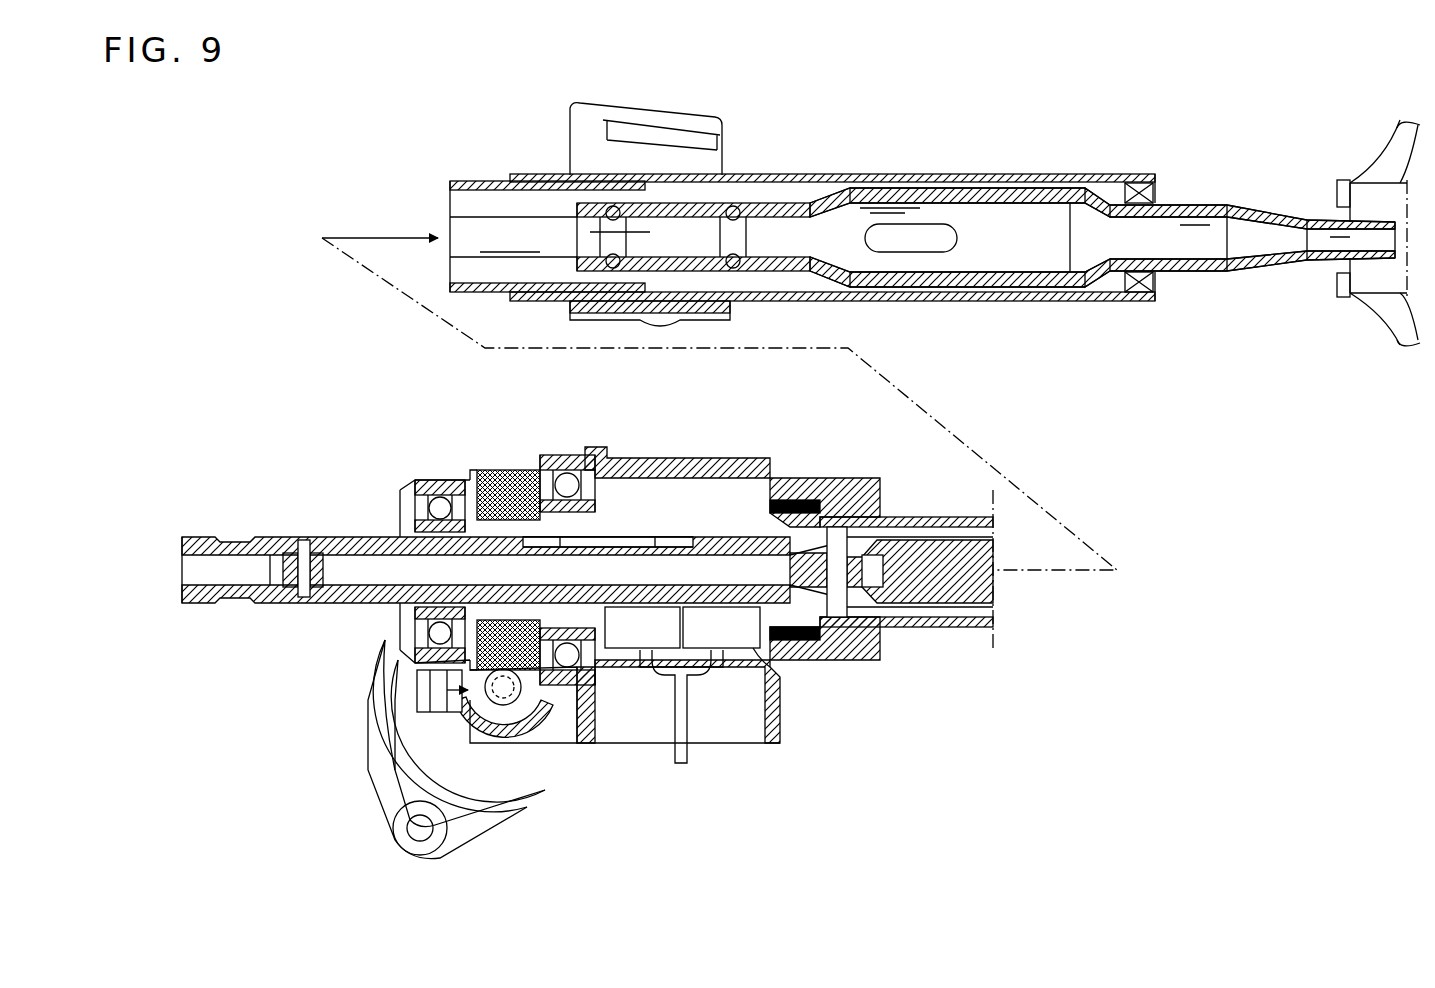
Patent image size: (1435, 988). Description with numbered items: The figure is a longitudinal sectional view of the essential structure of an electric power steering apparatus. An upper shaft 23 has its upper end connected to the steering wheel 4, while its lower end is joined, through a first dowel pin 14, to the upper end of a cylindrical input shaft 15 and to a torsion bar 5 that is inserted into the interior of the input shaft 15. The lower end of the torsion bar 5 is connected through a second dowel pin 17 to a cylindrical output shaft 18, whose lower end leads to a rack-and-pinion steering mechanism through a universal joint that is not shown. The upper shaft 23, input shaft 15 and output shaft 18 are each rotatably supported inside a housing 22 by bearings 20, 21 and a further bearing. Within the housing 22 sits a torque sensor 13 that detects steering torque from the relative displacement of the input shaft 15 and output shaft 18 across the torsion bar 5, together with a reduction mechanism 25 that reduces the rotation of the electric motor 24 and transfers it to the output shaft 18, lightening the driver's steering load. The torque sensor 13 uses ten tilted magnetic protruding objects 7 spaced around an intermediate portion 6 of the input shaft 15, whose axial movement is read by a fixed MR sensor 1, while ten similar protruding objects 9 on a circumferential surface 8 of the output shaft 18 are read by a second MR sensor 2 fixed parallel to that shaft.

The MR sensor 1 is at (760, 670).
The MR sensor 2 is at (630, 680).
The steering wheel 4 is at (1395, 345).
The torsion bar 5 is at (353, 565).
The intermediate portion 6 is at (718, 537).
The protruding objects 7 is at (775, 660).
The circumferential surface 8 is at (655, 537).
The protruding objects 9 is at (645, 660).
The torque sensor 13 is at (713, 712).
The first dowel pin 14 is at (920, 600).
The input shaft 15 is at (870, 505).
The second dowel pin 17 is at (303, 553).
The output shaft 18 is at (467, 468).
The bearing 20 is at (555, 453).
The bearing 21 is at (428, 480).
The housing 22 is at (1045, 302).
The upper shaft 23 is at (485, 215).
The electric motor for steering assistance 24 is at (402, 720).
The reduction mechanism 25 is at (405, 678).